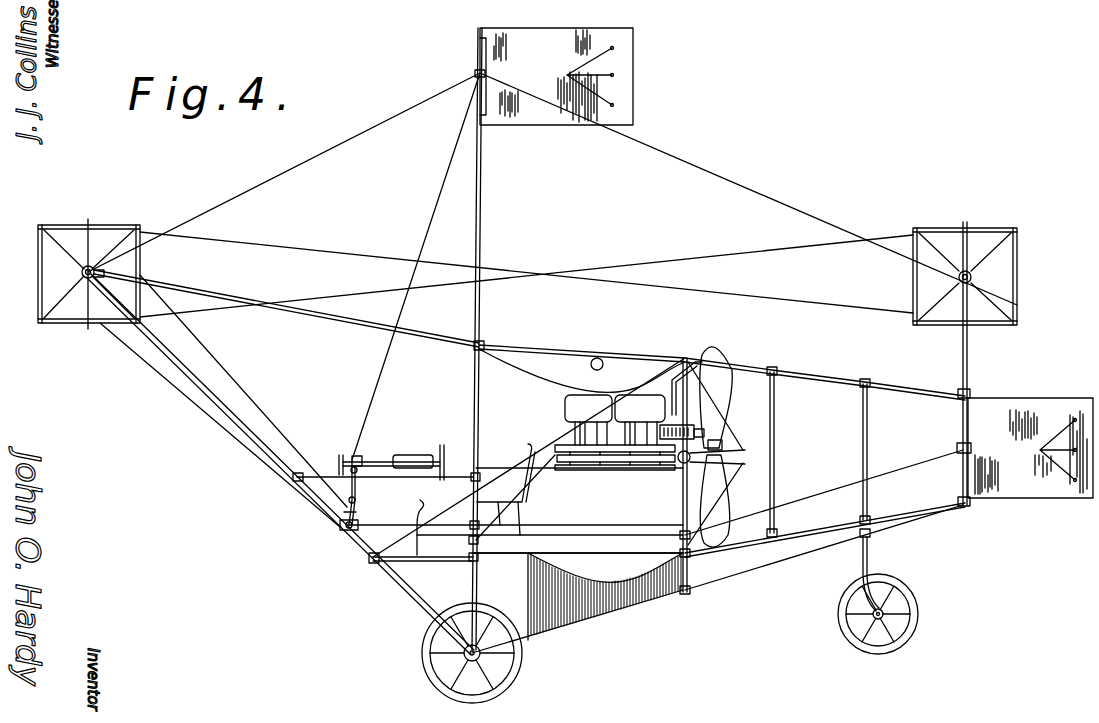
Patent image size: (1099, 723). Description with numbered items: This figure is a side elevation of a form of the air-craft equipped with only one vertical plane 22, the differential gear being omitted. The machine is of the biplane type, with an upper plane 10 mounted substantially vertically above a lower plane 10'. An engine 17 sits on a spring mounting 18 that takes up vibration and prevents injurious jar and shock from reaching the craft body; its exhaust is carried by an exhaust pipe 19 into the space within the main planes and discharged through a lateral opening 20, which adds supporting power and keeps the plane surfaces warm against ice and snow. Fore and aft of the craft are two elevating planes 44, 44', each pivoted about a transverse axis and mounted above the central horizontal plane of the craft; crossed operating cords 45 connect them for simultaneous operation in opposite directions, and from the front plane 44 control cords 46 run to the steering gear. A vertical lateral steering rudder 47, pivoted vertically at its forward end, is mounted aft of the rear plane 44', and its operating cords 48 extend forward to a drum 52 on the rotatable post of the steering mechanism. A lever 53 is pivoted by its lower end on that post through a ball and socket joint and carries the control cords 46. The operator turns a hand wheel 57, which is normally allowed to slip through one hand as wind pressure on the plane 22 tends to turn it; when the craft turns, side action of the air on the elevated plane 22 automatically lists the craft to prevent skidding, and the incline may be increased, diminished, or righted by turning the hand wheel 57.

The upper plane 10 is at (722, 359).
The lower plane 10' is at (577, 601).
The engine 17 is at (568, 410).
The spring mounting 18 is at (632, 460).
The exhaust pipe 19 is at (728, 420).
The lateral opening 20 is at (602, 359).
The vertical plane 22 is at (556, 76).
The front elevating plane 44 is at (89, 264).
The rear elevating plane 44' is at (979, 292).
The crossed operating cords 45 is at (325, 263).
The control cords 46 is at (215, 370).
The vertical lateral steering rudder 47 is at (1030, 448).
The operating cords 48 is at (372, 557).
The drum 52 is at (343, 525).
The lever 53 is at (356, 480).
The hand wheel 57 is at (435, 440).